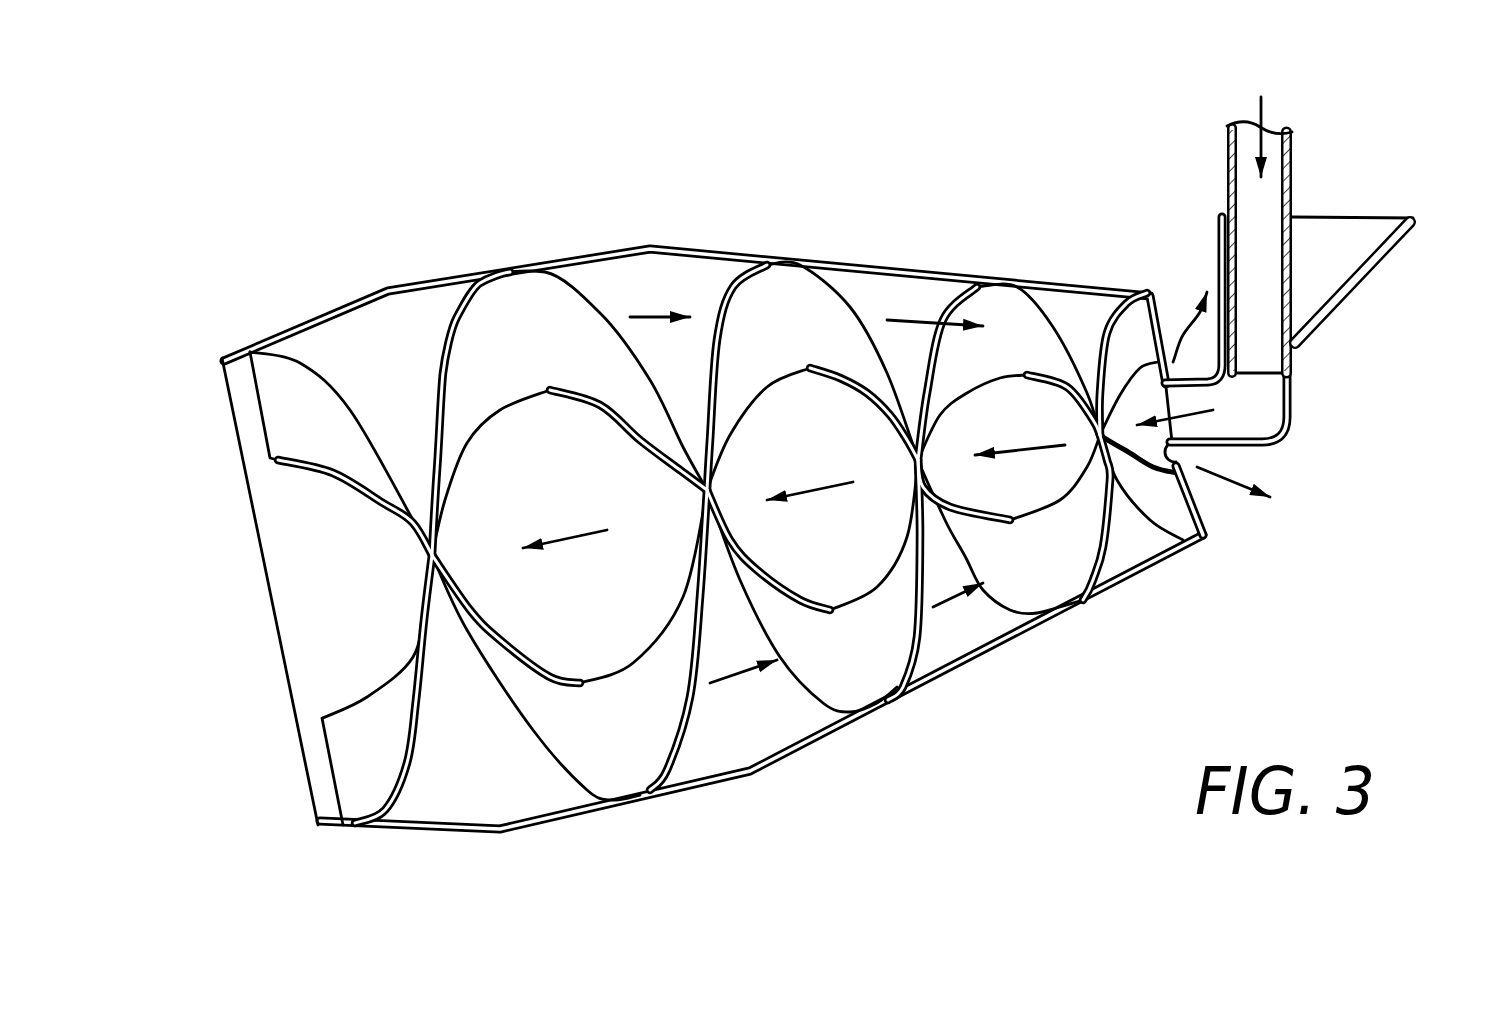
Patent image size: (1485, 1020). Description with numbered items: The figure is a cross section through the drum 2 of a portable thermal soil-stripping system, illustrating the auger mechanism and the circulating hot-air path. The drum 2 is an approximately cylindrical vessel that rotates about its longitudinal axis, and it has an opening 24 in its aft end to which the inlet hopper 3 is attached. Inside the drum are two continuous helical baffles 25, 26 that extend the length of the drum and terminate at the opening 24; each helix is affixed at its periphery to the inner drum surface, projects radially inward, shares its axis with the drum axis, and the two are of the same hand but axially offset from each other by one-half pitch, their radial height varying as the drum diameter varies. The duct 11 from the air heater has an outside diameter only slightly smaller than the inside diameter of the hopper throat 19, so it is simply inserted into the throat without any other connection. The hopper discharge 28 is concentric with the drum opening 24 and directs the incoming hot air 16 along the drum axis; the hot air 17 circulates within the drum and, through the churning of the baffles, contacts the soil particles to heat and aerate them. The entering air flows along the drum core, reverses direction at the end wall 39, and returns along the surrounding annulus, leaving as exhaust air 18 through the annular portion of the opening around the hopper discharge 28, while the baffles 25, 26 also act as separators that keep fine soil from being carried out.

The drum 2 is at (735, 252).
The inlet hopper 3 is at (1363, 273).
The duct 11 is at (1292, 167).
The incoming hot air 16 is at (1262, 112).
The hot air 17 is at (813, 487).
The exhaust air 18 is at (1192, 320).
The hopper throat 19 is at (1293, 410).
The opening 24 is at (1207, 513).
The helical baffle 25 is at (262, 412).
The helical baffle 26 is at (333, 777).
The hopper discharge 28 is at (1193, 453).
The end wall 39 is at (262, 582).